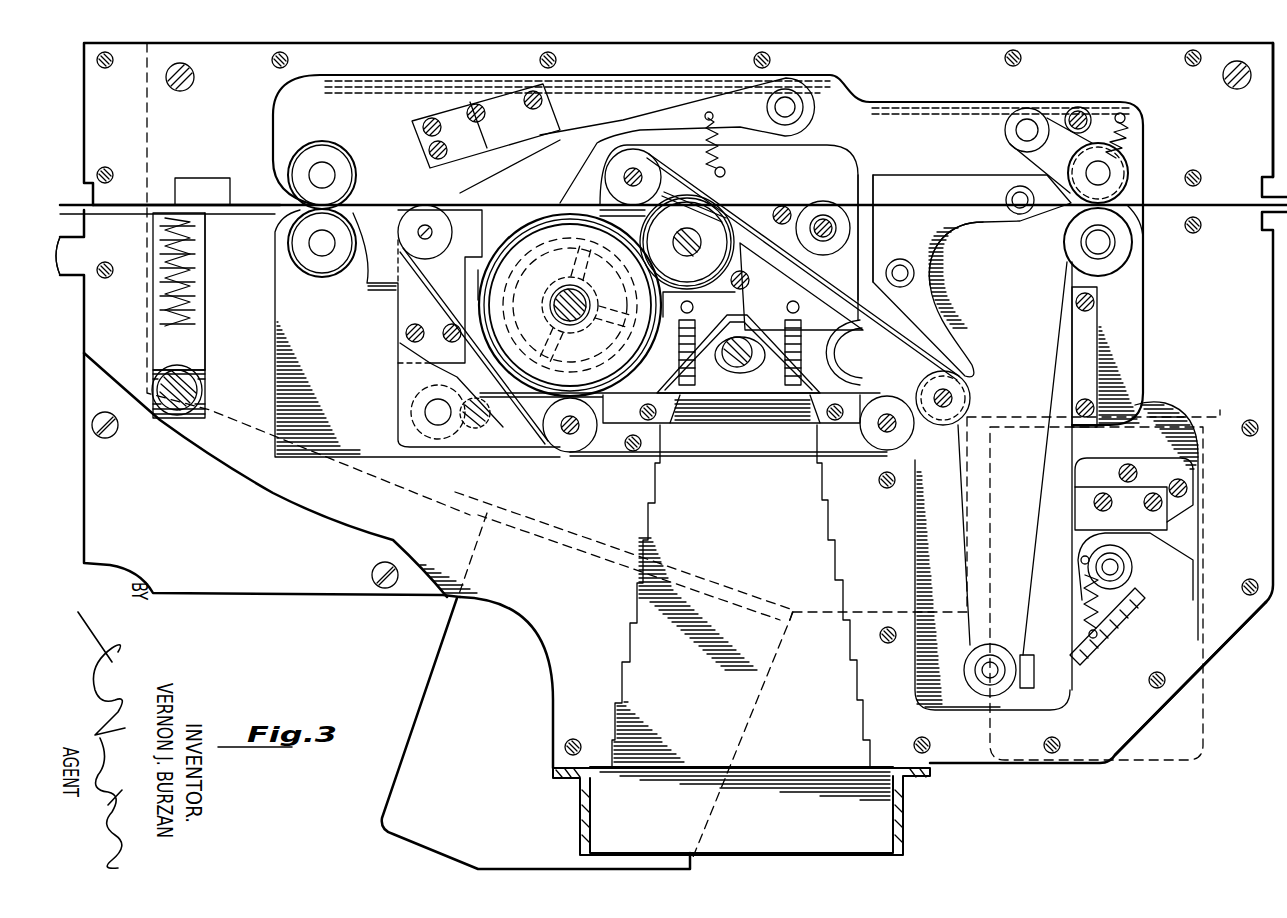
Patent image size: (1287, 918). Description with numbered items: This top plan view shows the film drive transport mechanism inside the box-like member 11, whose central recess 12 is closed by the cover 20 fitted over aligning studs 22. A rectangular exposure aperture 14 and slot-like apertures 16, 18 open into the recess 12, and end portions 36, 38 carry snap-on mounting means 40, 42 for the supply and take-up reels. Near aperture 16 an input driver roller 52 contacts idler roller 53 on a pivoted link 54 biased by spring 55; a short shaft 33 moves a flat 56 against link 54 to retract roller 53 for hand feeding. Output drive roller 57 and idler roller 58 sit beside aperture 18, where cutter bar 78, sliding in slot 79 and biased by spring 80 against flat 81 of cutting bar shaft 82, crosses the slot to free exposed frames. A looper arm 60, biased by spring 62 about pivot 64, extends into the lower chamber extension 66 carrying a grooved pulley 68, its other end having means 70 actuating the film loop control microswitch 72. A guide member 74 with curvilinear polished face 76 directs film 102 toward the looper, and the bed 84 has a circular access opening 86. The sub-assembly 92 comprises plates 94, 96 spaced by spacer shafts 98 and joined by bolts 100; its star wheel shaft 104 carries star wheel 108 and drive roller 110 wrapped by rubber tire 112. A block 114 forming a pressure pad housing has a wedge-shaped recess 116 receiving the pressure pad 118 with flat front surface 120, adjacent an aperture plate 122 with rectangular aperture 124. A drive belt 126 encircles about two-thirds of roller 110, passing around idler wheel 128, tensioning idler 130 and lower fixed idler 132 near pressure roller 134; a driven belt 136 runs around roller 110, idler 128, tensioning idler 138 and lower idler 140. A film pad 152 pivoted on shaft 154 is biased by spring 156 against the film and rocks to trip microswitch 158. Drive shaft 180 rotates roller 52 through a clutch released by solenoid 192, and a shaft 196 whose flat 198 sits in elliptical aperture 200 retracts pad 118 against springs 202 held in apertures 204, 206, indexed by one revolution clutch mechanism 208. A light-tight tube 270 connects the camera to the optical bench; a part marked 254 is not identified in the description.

The box-like member 11 is at (517, 589).
The central recess 12 is at (925, 100).
The exposure aperture 14 is at (768, 424).
The input slot-like aperture 16 is at (1215, 200).
The output slot-like aperture 18 is at (165, 203).
The cover 20 is at (180, 533).
The aligning studs 22 is at (193, 90).
The short shaft 33 is at (1075, 108).
The end portion 36 is at (1272, 377).
The end portion 38 is at (84, 137).
The snap-on mounting means 40 is at (1270, 257).
The snap-on mounting means 42 is at (88, 260).
The input driver roller 52 is at (1130, 258).
The idler roller 53 is at (1128, 178).
The short pivoted link 54 is at (1020, 154).
The spring 55 is at (1122, 152).
The flat 56 is at (1098, 150).
The output drive roller 57 is at (322, 274).
The idler roller 58 is at (322, 145).
The film tensioning and film supply loop controlling arm 60 is at (1040, 674).
The spring 62 is at (1110, 622).
The pivot 64 is at (1122, 582).
The lower chamber extension 66 is at (918, 675).
The grooved plastic pulley 68 is at (1093, 585).
The actuating means 70 is at (1078, 567).
The film loop control microswitch 72 is at (1170, 514).
The input film loop guide member 74 is at (925, 190).
The curvilinear polished face 76 is at (946, 248).
The cutter bar 78 is at (207, 320).
The slot 79 is at (206, 250).
The spring 80 is at (165, 287).
The flat 81 is at (185, 374).
The cutting bar shaft 82 is at (200, 392).
The bed or floor 84 is at (1014, 328).
The circular access opening 86 is at (478, 284).
The film drive sub-assembly 92 is at (835, 145).
The upper plate member 94 is at (397, 389).
The lower plate member 96 is at (860, 167).
The spacer shafts 98 is at (852, 226).
The bolts 100 is at (786, 206).
The photographic film 102 is at (1060, 272).
The central star wheel shaft 104 is at (572, 322).
The star wheel 108 is at (480, 312).
The star wheel drive roller 110 is at (515, 224).
The resilient member 112 is at (552, 227).
The pressure pad housing block 114 is at (802, 300).
The wedge shaped cutout 116 is at (744, 300).
The movable film aperture pressure pad member 118 is at (688, 424).
The flat planar front surface portion 120 is at (745, 395).
The aperture plate member 122 is at (620, 420).
The rectangular aperture 124 is at (806, 422).
The drive belt 126 is at (943, 430).
The enlarged idler wheel 128 is at (708, 224).
The adjustable tensioning idler roller 130 is at (656, 177).
The lower fixed idler roller 132 is at (970, 400).
The rubber covered pressure roller 134 is at (880, 450).
The driven idler belt 136 is at (395, 292).
The adjustable tensioning idler roller 138 is at (415, 212).
The lower idler 140 is at (568, 442).
The film pad or shoe 152 is at (588, 142).
The short shaft 154 is at (790, 98).
The spring 156 is at (724, 157).
The microswitch 158 is at (500, 100).
The drive shaft 180 is at (1085, 244).
The clutch control solenoid 192 is at (1180, 757).
The drive shaft 196 is at (807, 345).
The flat portion 198 is at (779, 304).
The elliptical aperture 200 is at (728, 380).
The springs 202 is at (703, 339).
The aperture 204 is at (830, 347).
The aperture 206 is at (828, 358).
The one revolution clutch control mechanism 208 is at (448, 634).
The shaft 254 is at (312, 252).
The light-tight tube 270 is at (905, 834).